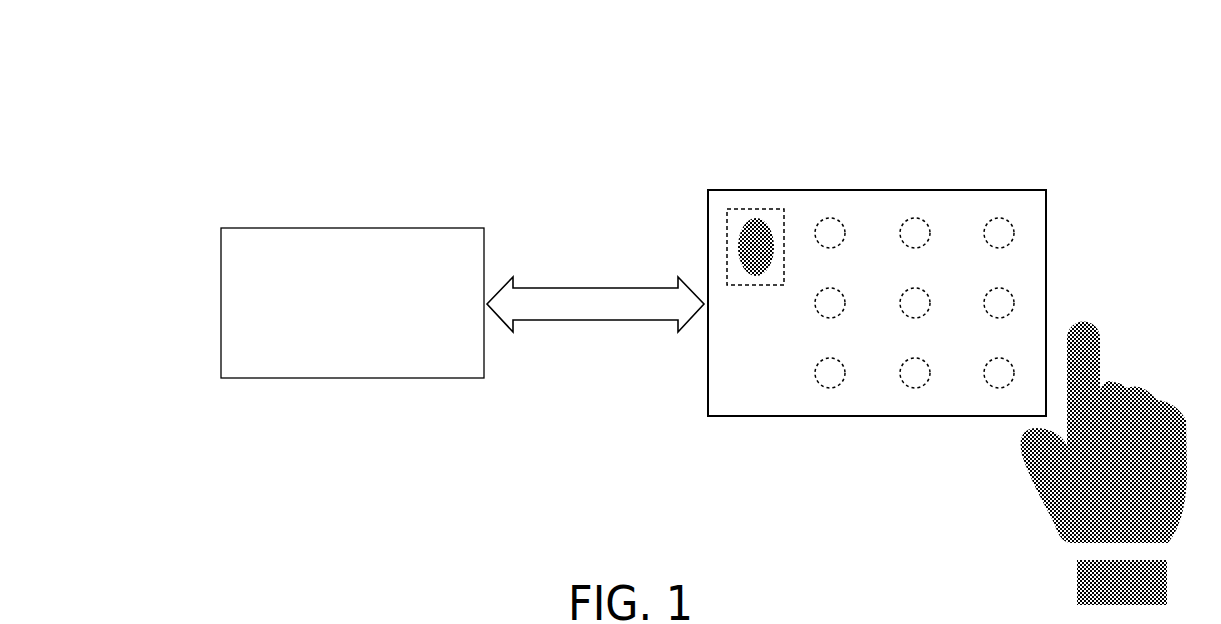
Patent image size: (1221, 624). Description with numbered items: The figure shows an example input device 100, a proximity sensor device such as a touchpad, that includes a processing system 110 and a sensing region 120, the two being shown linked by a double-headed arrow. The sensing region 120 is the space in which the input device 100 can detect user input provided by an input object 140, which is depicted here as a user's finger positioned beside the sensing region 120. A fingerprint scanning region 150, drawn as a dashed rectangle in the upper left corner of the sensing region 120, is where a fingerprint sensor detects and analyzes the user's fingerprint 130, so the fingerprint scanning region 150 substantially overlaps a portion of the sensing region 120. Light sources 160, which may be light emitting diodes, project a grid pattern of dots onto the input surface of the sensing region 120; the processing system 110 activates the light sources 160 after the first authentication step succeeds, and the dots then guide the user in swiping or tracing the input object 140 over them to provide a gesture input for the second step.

The input device 100 is at (181, 74).
The processing system 110 is at (339, 330).
The sensing region 120 is at (1007, 190).
The fingerprint 130 is at (738, 243).
The input object 140 is at (1079, 322).
The fingerprint scanning region 150 is at (755, 209).
The light sources 160 is at (816, 373).